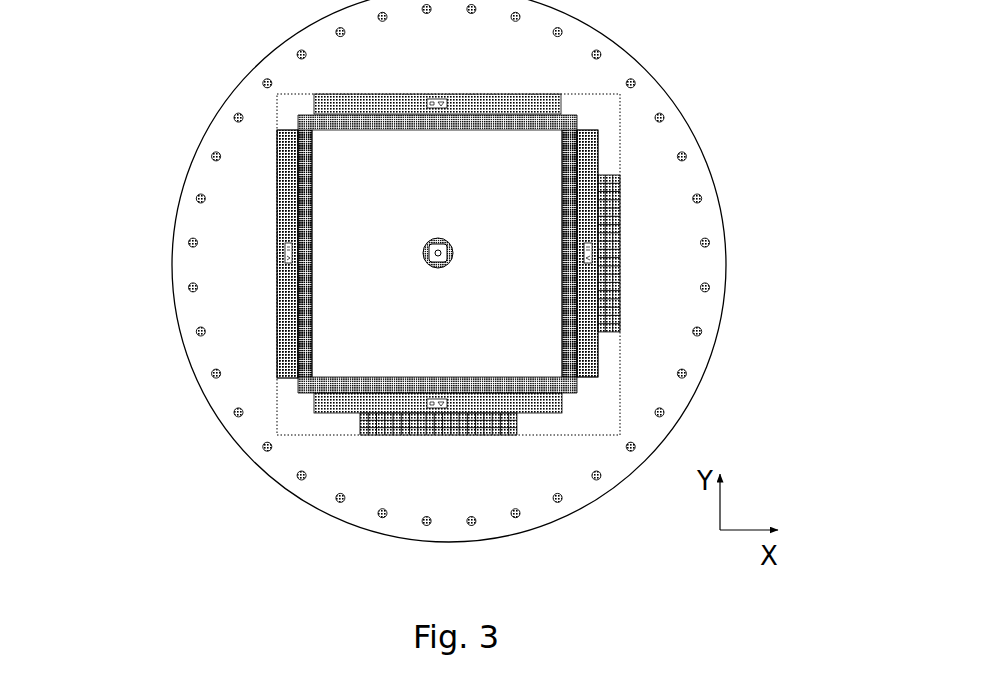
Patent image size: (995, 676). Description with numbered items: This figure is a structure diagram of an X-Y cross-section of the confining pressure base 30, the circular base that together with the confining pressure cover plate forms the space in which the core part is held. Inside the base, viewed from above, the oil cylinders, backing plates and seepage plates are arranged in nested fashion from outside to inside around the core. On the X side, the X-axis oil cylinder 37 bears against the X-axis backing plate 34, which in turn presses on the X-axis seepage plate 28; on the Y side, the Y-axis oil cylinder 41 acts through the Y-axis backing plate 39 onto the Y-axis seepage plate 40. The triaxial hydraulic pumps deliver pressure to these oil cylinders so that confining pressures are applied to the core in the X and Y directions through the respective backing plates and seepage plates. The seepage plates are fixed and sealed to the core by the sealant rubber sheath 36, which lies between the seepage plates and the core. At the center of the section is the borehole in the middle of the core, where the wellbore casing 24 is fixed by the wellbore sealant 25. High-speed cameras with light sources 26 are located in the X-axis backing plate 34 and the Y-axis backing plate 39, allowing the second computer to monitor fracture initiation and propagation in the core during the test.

The wellbore casing 24 is at (430, 245).
The wellbore sealant 25 is at (423, 265).
The high-speed cameras with light sources 26 is at (280, 253).
The X-axis seepage plate 28 is at (303, 360).
The confining pressure base 30 is at (570, 50).
The X-axis backing plate 34 is at (588, 350).
The sealant rubber sheath 36 is at (573, 287).
The X-axis oil cylinder 37 is at (613, 174).
The Y-axis backing plate 39 is at (532, 106).
The Y-axis seepage plate 40 is at (400, 122).
The Y-axis oil cylinder 41 is at (360, 424).